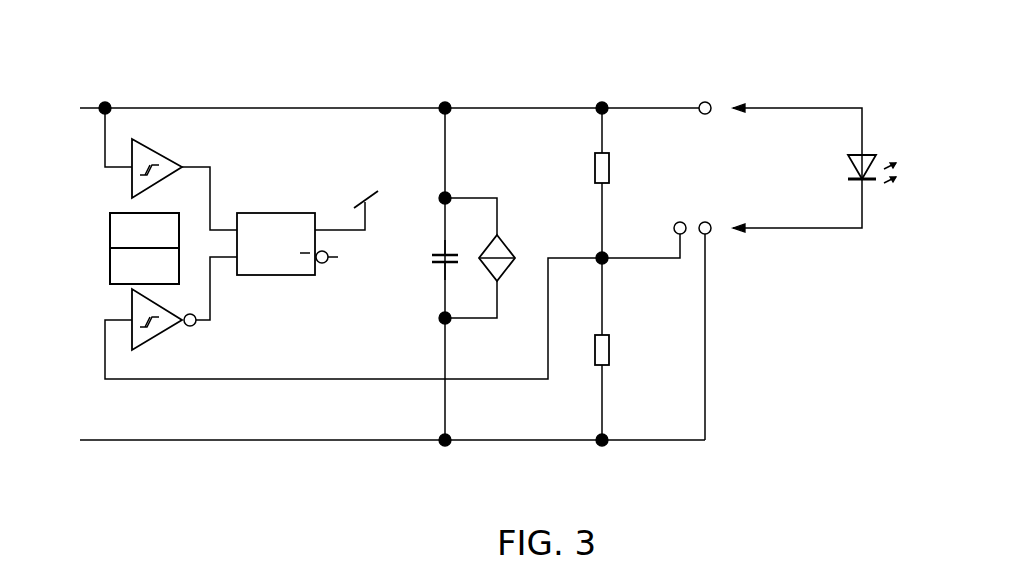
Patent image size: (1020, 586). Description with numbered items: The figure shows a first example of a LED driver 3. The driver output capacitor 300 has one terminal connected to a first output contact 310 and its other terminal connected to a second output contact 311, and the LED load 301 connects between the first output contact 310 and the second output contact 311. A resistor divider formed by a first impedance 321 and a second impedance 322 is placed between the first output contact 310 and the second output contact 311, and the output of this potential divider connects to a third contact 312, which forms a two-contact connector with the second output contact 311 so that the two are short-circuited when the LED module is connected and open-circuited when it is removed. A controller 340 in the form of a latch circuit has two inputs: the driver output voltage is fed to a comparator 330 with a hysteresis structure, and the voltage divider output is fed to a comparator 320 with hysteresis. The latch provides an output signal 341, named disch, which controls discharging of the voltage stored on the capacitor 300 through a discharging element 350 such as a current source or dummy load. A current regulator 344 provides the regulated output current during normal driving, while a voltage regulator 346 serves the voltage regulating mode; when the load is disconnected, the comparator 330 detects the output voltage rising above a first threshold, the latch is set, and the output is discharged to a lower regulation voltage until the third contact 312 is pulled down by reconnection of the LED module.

The LED driver 3 is at (818, 62).
The driver output capacitor 300 is at (428, 252).
The LED load 301 is at (869, 147).
The first output contact 310 is at (704, 101).
The second output contact 311 is at (711, 227).
The third contact 312 is at (675, 225).
The comparator with hysteresis 320 is at (152, 341).
The first impedance 321 is at (590, 170).
The second impedance 322 is at (609, 348).
The comparator with hysteresis structure 330 is at (152, 143).
The controller 340 is at (262, 213).
The output signal 341 is at (363, 166).
The current regulator 344 is at (110, 225).
The voltage regulator 346 is at (110, 264).
The discharging element 350 is at (515, 258).